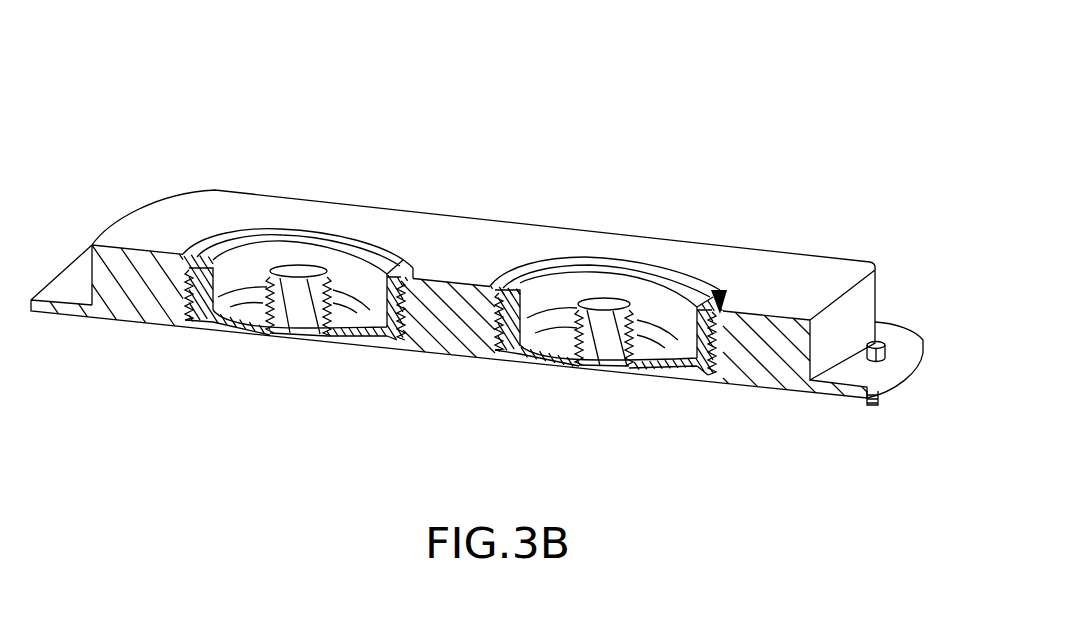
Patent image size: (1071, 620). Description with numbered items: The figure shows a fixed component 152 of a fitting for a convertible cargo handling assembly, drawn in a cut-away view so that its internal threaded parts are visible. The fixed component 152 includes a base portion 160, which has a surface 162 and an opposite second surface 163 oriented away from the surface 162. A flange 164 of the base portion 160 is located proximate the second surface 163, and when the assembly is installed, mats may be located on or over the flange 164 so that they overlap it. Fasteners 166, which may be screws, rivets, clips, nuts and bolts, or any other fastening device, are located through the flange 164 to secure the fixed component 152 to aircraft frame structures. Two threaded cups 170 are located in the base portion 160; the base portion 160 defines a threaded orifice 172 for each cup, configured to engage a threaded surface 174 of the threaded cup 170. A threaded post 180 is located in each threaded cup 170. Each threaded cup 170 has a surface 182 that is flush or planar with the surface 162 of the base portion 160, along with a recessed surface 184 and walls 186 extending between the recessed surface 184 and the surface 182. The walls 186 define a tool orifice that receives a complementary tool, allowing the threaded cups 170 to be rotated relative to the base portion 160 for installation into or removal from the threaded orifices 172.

The fixed component 152 is at (172, 130).
The base portion 160 is at (480, 250).
The surface 162 is at (780, 304).
The second surface 163 is at (143, 320).
The flange 164 is at (895, 333).
The fastener 166 is at (885, 357).
The threaded cup 170 is at (220, 320).
The threaded orifice 172 is at (720, 290).
The threaded surface 174 is at (398, 333).
The threaded post 180 is at (295, 287).
The surface 182 is at (380, 247).
The recessed surface 184 is at (215, 258).
The walls 186 is at (548, 270).